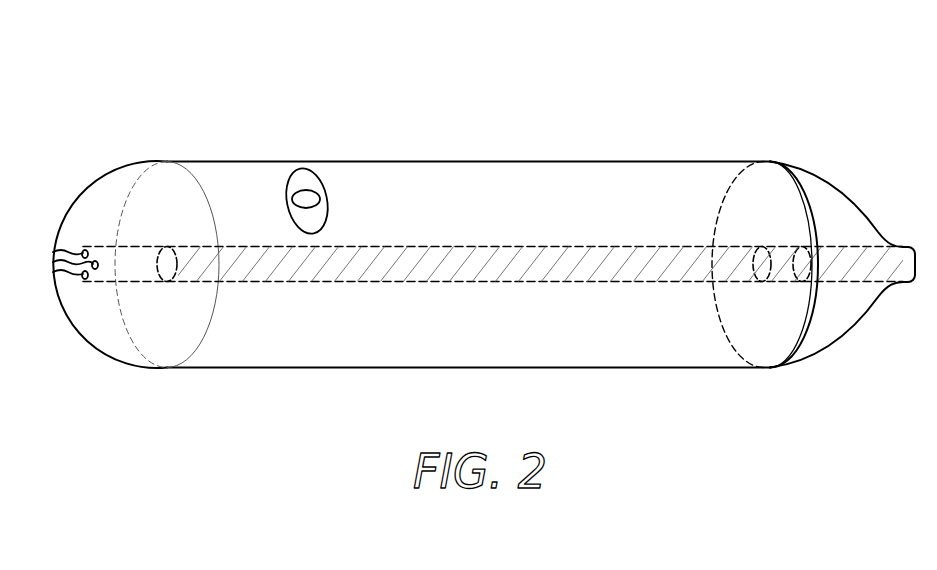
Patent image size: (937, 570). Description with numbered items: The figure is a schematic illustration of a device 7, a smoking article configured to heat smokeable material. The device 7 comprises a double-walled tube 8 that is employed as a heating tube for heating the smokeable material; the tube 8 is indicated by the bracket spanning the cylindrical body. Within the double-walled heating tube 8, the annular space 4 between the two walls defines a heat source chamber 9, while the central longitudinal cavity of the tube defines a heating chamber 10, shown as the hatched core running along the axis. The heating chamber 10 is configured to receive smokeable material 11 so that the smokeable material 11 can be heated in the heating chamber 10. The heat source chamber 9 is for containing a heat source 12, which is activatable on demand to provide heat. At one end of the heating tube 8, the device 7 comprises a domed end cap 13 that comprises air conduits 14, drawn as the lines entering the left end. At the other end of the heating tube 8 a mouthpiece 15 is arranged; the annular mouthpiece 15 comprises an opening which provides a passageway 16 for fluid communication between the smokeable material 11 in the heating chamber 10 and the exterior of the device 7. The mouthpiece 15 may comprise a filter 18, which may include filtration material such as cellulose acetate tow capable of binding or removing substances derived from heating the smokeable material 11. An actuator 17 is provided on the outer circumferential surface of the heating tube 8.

The device 7 is at (244, 78).
The double-walled tube 8 is at (762, 126).
The heat source chamber 9 is at (452, 368).
The annular space 4 is at (244, 348).
The heat source 12 is at (551, 348).
The end cap 13 is at (93, 327).
The heating chamber 10 is at (352, 282).
The smokeable material 11 is at (624, 272).
The air conduits 14 is at (62, 264).
The actuator 17 is at (306, 197).
The passageway 16 is at (757, 322).
The mouthpiece 15 is at (850, 206).
The filter 18 is at (897, 273).